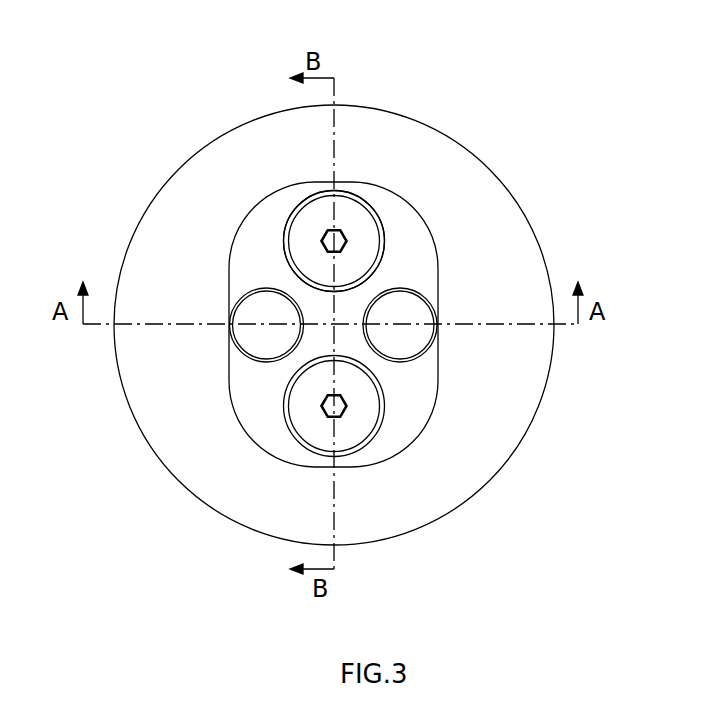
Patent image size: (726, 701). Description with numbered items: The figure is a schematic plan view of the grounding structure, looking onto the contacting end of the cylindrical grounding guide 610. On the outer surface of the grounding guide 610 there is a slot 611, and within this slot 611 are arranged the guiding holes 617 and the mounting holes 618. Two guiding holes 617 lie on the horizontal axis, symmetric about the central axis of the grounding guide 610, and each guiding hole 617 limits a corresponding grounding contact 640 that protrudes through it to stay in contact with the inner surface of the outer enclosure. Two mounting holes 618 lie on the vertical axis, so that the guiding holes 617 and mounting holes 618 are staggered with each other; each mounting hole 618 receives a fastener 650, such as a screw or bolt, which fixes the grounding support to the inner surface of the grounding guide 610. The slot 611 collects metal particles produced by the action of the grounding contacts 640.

The grounding guide 610 is at (495, 218).
The slot 611 is at (408, 412).
The guiding hole 617 is at (437, 338).
The mounting hole 618 is at (295, 210).
The grounding contact 640 is at (260, 343).
The fastener 650 is at (347, 217).